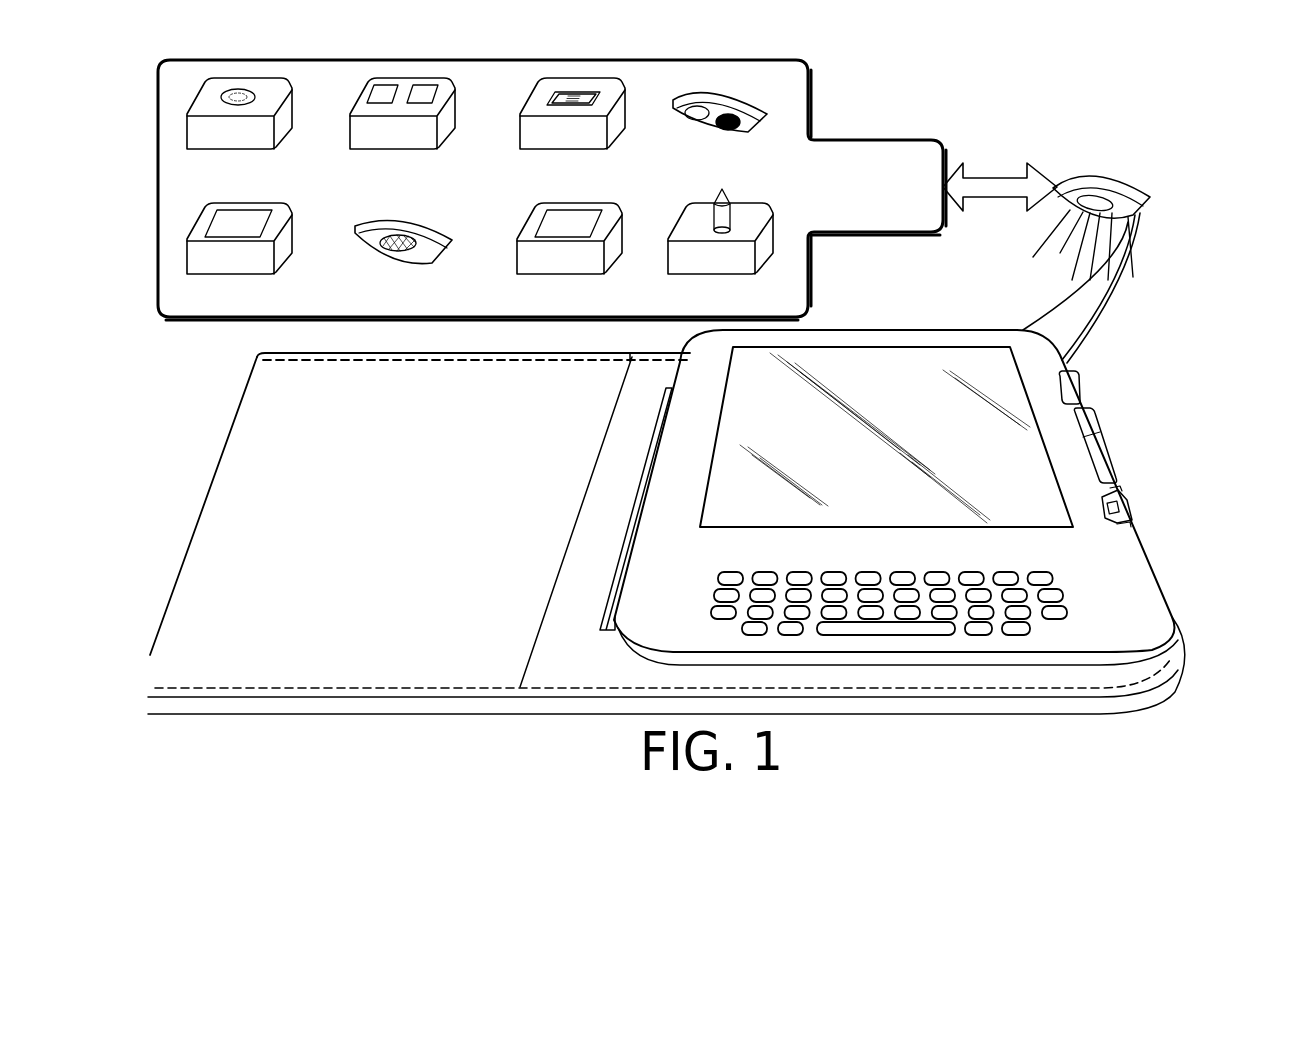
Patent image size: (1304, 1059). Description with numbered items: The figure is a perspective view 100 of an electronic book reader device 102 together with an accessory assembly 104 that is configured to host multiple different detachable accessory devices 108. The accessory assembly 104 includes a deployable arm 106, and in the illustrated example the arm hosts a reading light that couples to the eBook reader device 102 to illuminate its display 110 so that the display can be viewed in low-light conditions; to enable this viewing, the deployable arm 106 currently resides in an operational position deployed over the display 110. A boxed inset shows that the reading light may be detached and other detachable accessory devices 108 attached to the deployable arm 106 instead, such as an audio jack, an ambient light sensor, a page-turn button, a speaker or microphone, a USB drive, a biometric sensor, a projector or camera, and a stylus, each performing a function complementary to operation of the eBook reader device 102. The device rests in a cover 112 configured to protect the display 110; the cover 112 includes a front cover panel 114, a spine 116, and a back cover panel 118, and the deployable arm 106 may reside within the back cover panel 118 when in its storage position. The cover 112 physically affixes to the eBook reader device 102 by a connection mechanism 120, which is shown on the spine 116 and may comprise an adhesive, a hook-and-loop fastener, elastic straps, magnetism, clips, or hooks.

The perspective view 100 is at (1188, 92).
The eBook reader device 102 is at (1118, 418).
The accessory assembly 104 is at (1136, 227).
The deployable arm 106 is at (1107, 327).
The detachable accessory devices 108 is at (607, 190).
The display 110 is at (886, 437).
The cover 112 is at (228, 735).
The front cover panel 114 is at (263, 660).
The spine 116 is at (573, 662).
The back cover panel 118 is at (1112, 677).
The connection mechanism 120 is at (630, 510).